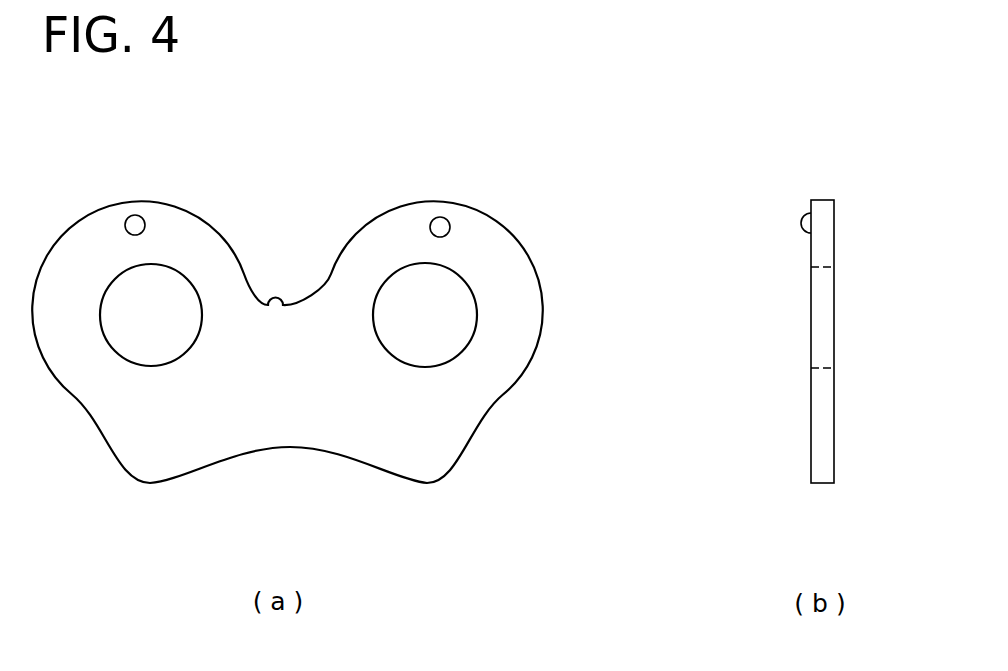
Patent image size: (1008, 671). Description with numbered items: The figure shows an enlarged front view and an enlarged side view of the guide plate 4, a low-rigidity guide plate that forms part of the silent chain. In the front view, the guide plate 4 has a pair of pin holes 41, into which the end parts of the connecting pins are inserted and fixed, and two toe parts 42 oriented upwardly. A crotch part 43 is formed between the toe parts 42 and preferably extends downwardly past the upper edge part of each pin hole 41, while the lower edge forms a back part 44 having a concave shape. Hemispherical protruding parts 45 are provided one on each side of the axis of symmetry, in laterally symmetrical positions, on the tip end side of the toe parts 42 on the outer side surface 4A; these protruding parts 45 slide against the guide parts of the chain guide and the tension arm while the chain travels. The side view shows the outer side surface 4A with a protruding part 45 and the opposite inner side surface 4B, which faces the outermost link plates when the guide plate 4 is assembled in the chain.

The guide plate 4 is at (254, 161).
The pin holes 41 is at (104, 334).
The toe parts 42 is at (78, 227).
The crotch part 43 is at (268, 306).
The back part 44 is at (288, 450).
The hemispherical protruding parts 45 is at (135, 221).
The outer side surface 4A is at (810, 467).
The inner side surface 4B is at (833, 467).